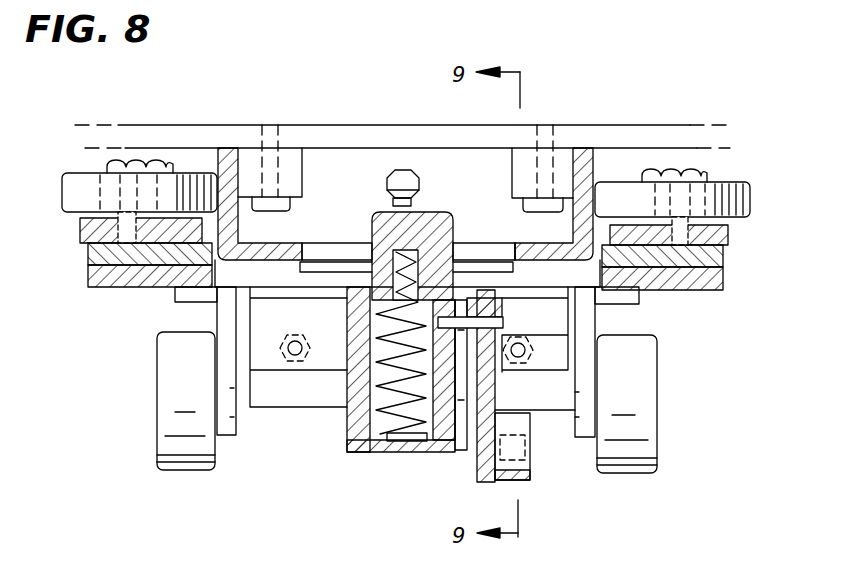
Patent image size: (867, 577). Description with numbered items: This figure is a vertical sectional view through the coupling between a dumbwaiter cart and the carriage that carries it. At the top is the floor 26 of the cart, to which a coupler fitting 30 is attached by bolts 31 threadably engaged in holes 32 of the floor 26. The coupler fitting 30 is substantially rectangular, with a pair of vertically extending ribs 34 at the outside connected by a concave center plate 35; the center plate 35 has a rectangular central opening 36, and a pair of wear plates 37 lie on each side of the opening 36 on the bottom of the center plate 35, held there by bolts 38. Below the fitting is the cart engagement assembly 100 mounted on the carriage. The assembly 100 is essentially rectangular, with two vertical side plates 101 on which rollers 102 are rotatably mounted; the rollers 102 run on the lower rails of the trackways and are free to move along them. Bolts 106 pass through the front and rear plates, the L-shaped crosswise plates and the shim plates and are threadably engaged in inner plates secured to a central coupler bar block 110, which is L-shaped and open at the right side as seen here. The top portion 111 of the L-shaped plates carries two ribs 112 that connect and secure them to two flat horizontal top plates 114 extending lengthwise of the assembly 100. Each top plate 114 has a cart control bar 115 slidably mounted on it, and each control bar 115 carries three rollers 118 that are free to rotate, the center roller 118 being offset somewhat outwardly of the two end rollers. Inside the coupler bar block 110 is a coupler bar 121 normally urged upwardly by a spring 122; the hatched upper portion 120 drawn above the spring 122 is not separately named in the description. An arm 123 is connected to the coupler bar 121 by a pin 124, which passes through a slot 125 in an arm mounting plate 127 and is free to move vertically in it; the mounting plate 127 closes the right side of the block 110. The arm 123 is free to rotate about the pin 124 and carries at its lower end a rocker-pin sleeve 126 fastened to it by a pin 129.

The floor 26 is at (375, 128).
The coupler fitting 30 is at (272, 246).
The bolts 31 is at (285, 204).
The holes 32 is at (270, 130).
The vertically extending ribs 34 is at (595, 152).
The center plate 35 is at (540, 262).
The central opening 36 is at (484, 250).
The wear plates 37 is at (300, 266).
The bolts 38 is at (410, 185).
The cart engagement assembly 100 is at (356, 304).
The vertical side plates 101 is at (237, 378).
The rollers 102 is at (202, 462).
The bolts 106 is at (293, 358).
The coupler bar block 110 is at (362, 455).
The top portion 111 is at (180, 299).
The ribs 112 is at (100, 275).
The top plates 114 is at (95, 255).
The cart control bar 115 is at (85, 235).
The rollers 118 is at (205, 178).
The block 120 is at (356, 288).
The coupler bar 121 is at (432, 216).
The spring 122 is at (418, 406).
The arm 123 is at (486, 406).
The pin 124 is at (490, 323).
The slot 125 is at (438, 458).
The rocker-pin sleeve 126 is at (522, 482).
The arm mounting plate 127 is at (462, 455).
The pin 129 is at (530, 442).